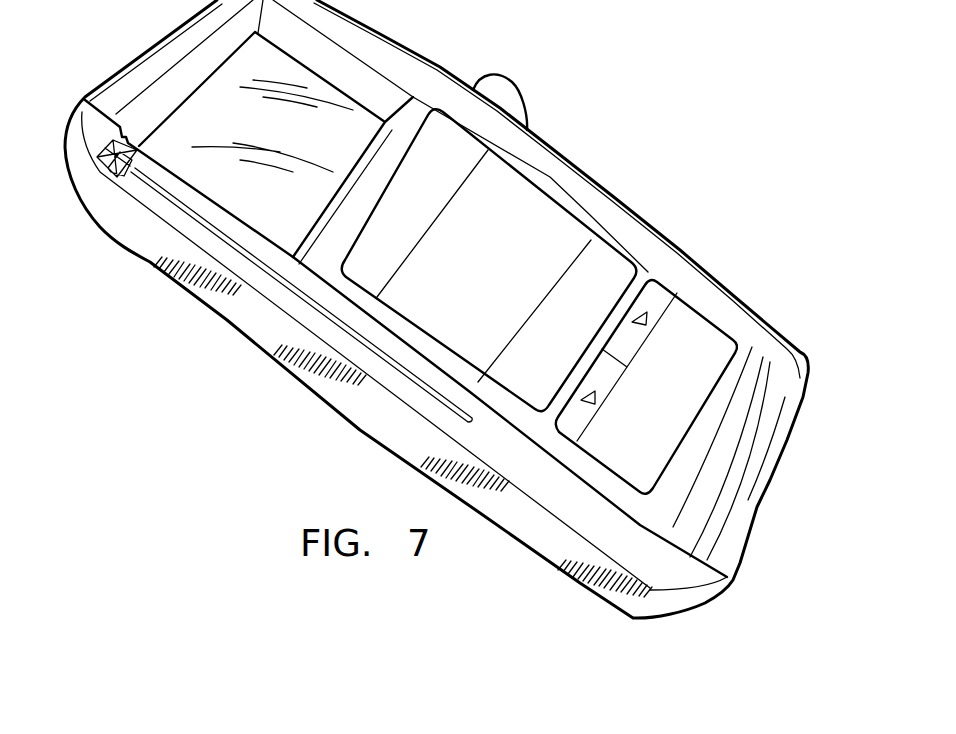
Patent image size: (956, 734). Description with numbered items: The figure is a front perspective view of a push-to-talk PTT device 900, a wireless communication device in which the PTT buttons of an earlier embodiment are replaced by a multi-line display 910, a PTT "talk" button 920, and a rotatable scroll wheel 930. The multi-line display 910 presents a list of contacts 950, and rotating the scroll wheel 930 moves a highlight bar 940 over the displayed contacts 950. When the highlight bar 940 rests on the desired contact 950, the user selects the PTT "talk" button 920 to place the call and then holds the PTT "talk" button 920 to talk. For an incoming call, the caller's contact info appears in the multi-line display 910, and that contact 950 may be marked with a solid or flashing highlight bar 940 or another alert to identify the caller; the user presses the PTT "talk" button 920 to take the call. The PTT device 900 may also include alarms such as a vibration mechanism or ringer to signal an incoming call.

The PTT device 900 is at (652, 131).
The multi-line display 910 is at (434, 174).
The PTT "talk" button 920 is at (702, 345).
The rotatable scroll wheel 930 is at (510, 103).
The highlight bar 940 is at (377, 297).
The contacts 950 is at (456, 346).